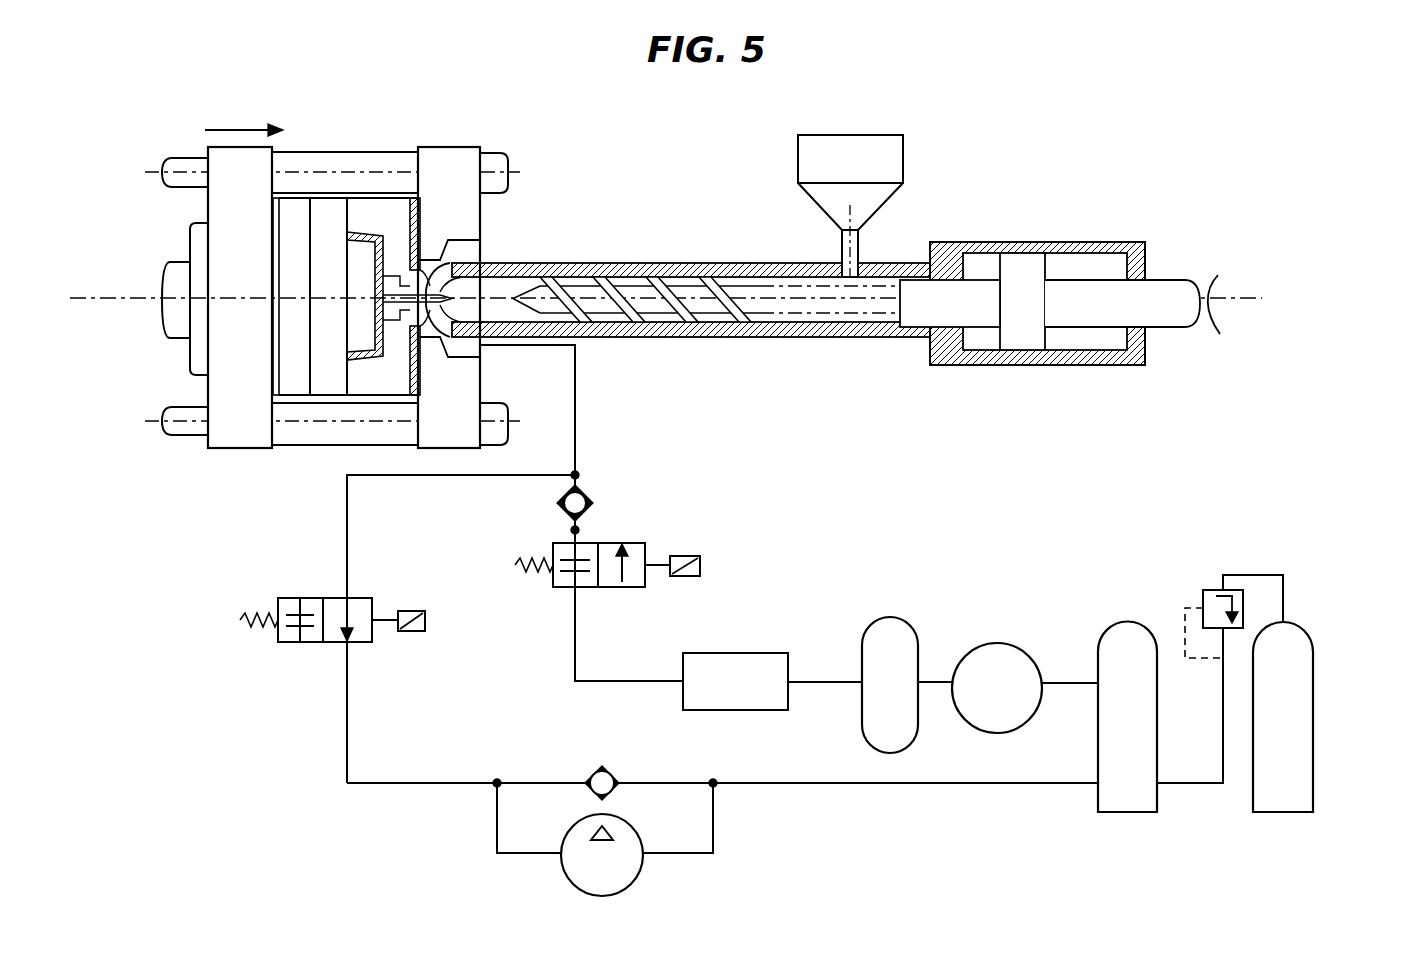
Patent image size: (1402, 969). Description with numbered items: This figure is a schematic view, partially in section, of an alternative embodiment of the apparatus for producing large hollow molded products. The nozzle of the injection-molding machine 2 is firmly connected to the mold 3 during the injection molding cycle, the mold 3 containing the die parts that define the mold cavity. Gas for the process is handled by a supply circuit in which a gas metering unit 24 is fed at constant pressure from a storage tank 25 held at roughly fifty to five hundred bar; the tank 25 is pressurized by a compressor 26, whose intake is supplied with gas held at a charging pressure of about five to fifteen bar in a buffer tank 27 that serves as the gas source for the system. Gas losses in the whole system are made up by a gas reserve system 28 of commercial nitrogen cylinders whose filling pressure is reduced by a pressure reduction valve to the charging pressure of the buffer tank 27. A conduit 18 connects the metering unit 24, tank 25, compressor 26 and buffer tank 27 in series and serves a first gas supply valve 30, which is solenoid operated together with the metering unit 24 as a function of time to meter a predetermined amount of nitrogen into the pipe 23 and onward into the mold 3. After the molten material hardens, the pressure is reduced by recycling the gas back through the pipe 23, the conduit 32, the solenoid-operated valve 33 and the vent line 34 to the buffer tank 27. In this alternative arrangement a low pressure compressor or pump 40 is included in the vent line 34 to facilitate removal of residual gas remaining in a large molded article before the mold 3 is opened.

The mold 3 is at (453, 138).
The injection-molding machine 2 is at (928, 166).
The pipe 23 is at (577, 420).
The conduit 32 is at (430, 475).
The first gas supply valve 30 is at (630, 587).
The solenoid-operated valve 33 is at (358, 642).
The conduit 18 is at (583, 681).
The gas metering unit 24 is at (735, 653).
The storage tank 25 is at (900, 617).
The compressor 26 is at (1018, 647).
The buffer tank 27 is at (1157, 703).
The gas reserve system 28 is at (1313, 703).
The vent line 34 is at (905, 783).
The low pressure compressor or pump 40 is at (634, 883).